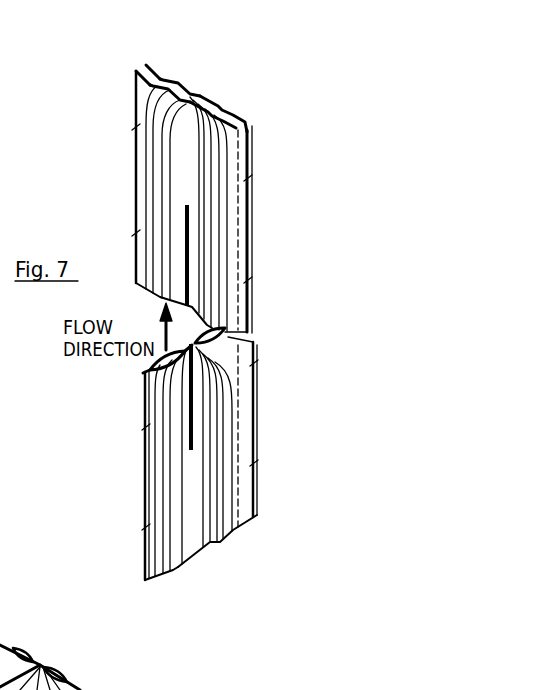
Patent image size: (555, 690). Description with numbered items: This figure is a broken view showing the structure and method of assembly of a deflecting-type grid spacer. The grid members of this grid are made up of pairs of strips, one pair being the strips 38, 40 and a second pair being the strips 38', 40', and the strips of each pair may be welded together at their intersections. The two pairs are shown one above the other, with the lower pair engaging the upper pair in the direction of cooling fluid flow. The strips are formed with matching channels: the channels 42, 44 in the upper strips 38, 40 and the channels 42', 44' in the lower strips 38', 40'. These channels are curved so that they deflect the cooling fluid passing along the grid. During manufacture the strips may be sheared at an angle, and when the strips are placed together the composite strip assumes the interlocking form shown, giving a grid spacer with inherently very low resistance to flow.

The strip 38 is at (224, 214).
The strip 40 is at (158, 319).
The channel 42 is at (201, 58).
The channel 44 is at (109, 174).
The strip 38' is at (129, 461).
The strip 40' is at (142, 477).
The channel 42' is at (131, 371).
The channel 44' is at (182, 511).